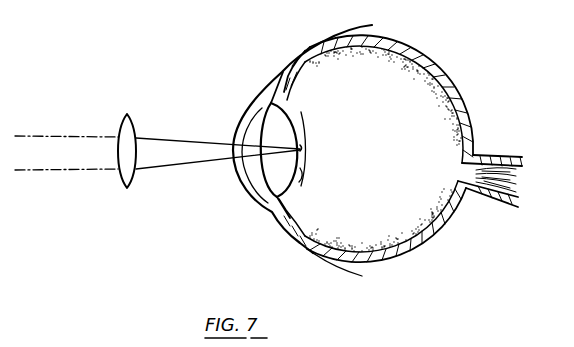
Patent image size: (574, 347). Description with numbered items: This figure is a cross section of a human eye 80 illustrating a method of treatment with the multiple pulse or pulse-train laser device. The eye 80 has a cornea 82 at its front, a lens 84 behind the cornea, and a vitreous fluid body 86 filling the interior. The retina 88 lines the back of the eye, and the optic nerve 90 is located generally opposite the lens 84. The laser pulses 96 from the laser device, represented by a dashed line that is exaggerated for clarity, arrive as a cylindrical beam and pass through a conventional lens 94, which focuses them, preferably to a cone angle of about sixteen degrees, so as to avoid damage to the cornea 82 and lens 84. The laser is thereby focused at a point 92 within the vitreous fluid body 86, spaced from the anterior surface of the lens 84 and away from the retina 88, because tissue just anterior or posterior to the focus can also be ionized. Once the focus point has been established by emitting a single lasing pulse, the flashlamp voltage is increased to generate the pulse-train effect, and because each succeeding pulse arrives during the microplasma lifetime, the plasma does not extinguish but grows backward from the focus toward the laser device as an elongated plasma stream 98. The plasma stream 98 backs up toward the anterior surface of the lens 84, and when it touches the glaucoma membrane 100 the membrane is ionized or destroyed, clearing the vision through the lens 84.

The human eye 80 is at (472, 71).
The cornea 82 is at (247, 194).
The lens 84 is at (281, 133).
The vitreous fluid body 86 is at (391, 174).
The retina 88 is at (455, 127).
The optic nerve 90 is at (507, 173).
The focus point 92 is at (312, 151).
The conventional lens 94 is at (127, 188).
The laser pulses 96 is at (48, 135).
The plasma stream 98 is at (304, 146).
The glaucoma membrane 100 is at (304, 173).